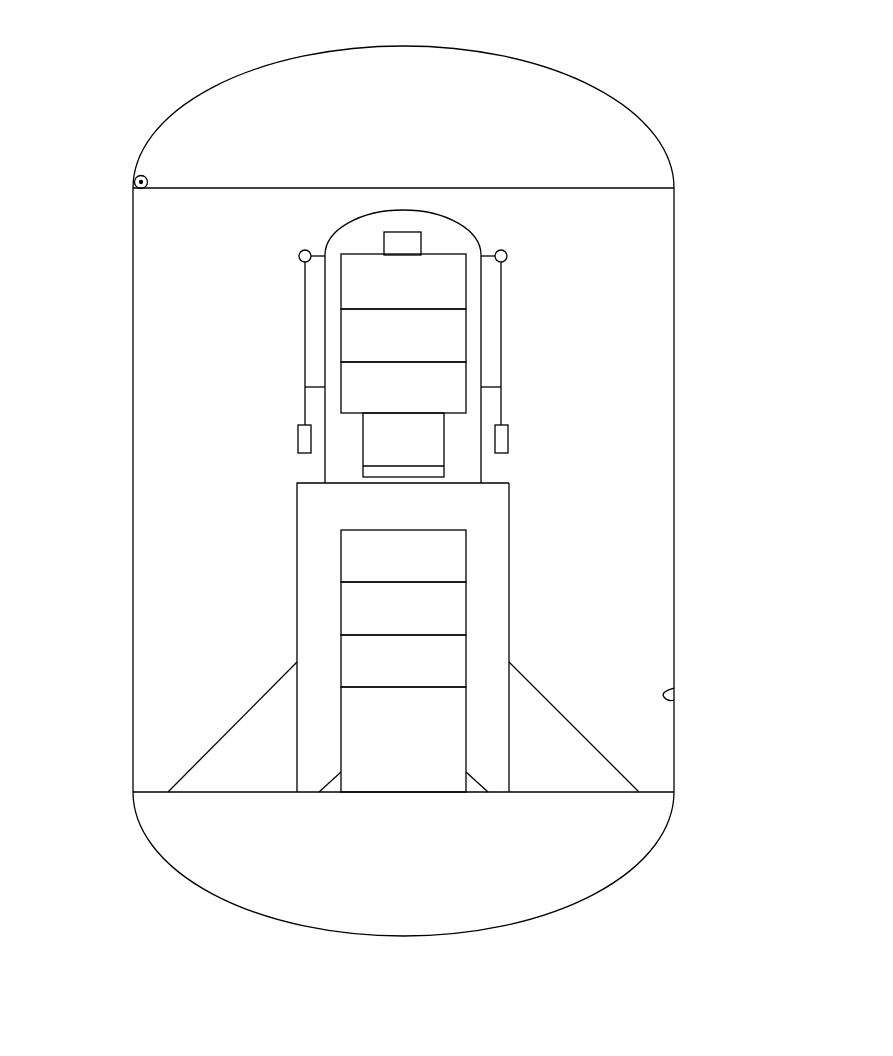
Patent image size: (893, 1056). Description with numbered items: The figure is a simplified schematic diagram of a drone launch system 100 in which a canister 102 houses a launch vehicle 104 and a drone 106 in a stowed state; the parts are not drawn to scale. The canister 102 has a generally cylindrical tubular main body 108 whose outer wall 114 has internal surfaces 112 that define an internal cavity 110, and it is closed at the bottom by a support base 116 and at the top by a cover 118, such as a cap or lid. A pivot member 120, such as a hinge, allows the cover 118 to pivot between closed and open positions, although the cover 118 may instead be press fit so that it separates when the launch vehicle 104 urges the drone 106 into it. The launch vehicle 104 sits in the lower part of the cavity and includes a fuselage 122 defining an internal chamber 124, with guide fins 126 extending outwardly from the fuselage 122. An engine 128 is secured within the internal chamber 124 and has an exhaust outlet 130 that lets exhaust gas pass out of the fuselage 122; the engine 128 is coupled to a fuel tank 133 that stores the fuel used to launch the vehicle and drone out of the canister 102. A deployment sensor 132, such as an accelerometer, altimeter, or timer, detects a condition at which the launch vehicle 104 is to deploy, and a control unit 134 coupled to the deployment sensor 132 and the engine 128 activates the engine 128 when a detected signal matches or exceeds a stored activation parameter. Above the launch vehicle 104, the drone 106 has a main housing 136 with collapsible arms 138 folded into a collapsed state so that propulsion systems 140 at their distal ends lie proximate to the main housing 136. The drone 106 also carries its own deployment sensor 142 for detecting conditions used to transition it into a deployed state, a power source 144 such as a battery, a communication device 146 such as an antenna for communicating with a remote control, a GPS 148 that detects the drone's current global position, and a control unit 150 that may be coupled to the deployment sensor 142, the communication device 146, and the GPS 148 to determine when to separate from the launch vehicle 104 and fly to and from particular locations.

The drone launch system 100 is at (104, 44).
The canister 102 is at (414, 491).
The launch vehicle 104 is at (403, 664).
The drone 106 is at (408, 328).
The main body 108 is at (674, 273).
The internal cavity 110 is at (641, 586).
The internal surfaces 112 is at (674, 700).
The outer wall 114 is at (674, 650).
The support base 116 is at (236, 793).
The cover 118 is at (204, 188).
The pivot member 120 is at (134, 183).
The fuselage 122 is at (297, 510).
The internal chamber 124 is at (489, 514).
The guide fins 126 is at (232, 728).
The engine 128 is at (466, 748).
The exhaust outlet 130 is at (403, 793).
The deployment sensor 132 is at (341, 556).
The fuel tank 133 is at (341, 661).
The control unit 134 is at (341, 608).
The main housing 136 is at (453, 222).
The collapsible arms 138 is at (305, 315).
The propulsion systems 140 is at (298, 440).
The deployment sensor 142 is at (466, 334).
The power source 144 is at (403, 232).
The communication device 146 is at (370, 254).
The global positioning system (GPS) 148 is at (403, 467).
The control unit 150 is at (466, 380).